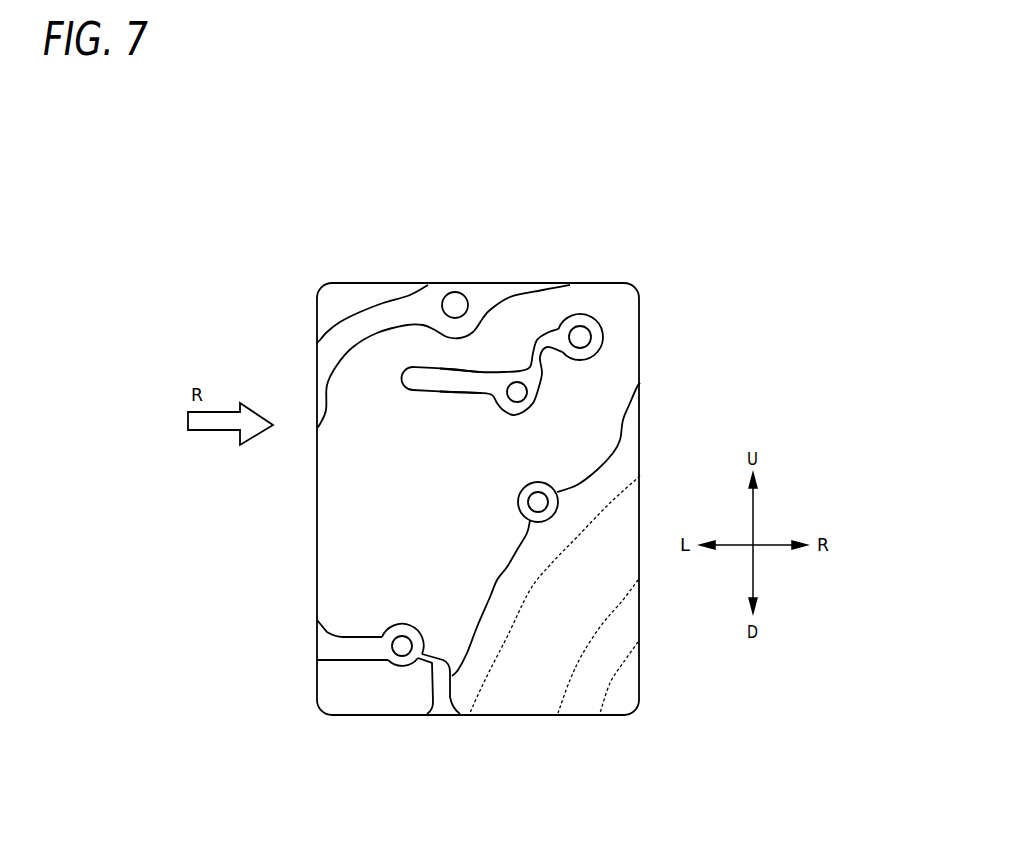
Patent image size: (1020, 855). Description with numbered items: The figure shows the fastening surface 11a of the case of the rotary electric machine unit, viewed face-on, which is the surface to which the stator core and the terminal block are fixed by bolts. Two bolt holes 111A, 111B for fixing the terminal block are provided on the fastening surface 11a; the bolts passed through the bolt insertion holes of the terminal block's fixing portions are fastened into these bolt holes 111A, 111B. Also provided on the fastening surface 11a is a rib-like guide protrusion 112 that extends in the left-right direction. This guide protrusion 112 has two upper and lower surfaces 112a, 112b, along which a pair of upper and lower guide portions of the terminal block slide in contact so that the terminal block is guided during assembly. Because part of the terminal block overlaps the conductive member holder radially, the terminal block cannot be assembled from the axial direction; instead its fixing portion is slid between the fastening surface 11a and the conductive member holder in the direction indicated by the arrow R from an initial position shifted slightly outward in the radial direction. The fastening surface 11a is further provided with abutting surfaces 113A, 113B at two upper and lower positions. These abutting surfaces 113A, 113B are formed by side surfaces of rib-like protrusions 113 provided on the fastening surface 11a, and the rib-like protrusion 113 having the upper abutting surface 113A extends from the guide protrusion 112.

The fastening surface 11a is at (337, 479).
The guide protrusion 112 is at (440, 380).
The upper surface of the guide protrusion 112a is at (475, 365).
The lower surface of the guide protrusion 112b is at (465, 395).
The rib-like protrusion 113 is at (550, 355).
The upper abutting surface 113A is at (530, 347).
The bolt hole 111A is at (528, 388).
The bolt hole 111B is at (387, 665).
The lower abutting surface 113B is at (432, 683).